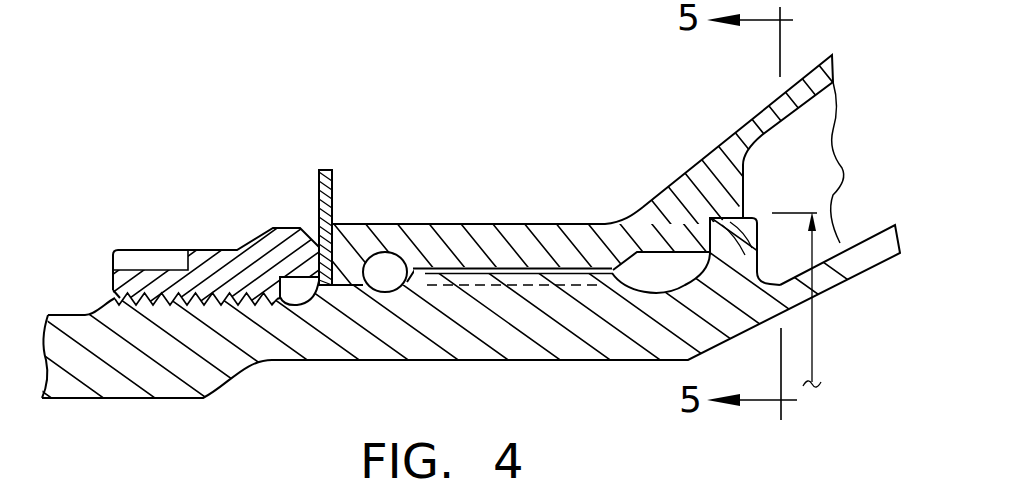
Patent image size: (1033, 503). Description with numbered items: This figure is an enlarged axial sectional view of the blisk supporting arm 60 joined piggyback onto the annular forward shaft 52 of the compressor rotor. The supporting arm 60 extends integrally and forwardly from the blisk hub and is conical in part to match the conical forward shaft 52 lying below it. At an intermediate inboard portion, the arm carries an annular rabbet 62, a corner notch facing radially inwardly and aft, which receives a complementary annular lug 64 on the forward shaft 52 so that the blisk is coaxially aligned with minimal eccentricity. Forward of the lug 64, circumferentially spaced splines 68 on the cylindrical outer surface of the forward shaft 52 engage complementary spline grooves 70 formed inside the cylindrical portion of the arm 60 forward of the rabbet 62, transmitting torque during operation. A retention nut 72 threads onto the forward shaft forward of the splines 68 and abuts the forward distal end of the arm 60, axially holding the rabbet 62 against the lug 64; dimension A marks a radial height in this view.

The forward shaft 52 is at (898, 255).
The supporting arm 60 is at (818, 62).
The rabbet 62 is at (757, 258).
The lug 64 is at (743, 218).
The splines 68 is at (406, 260).
The spline grooves 70 is at (525, 277).
The retention nut 72 is at (240, 243).
The dimension A is at (813, 350).